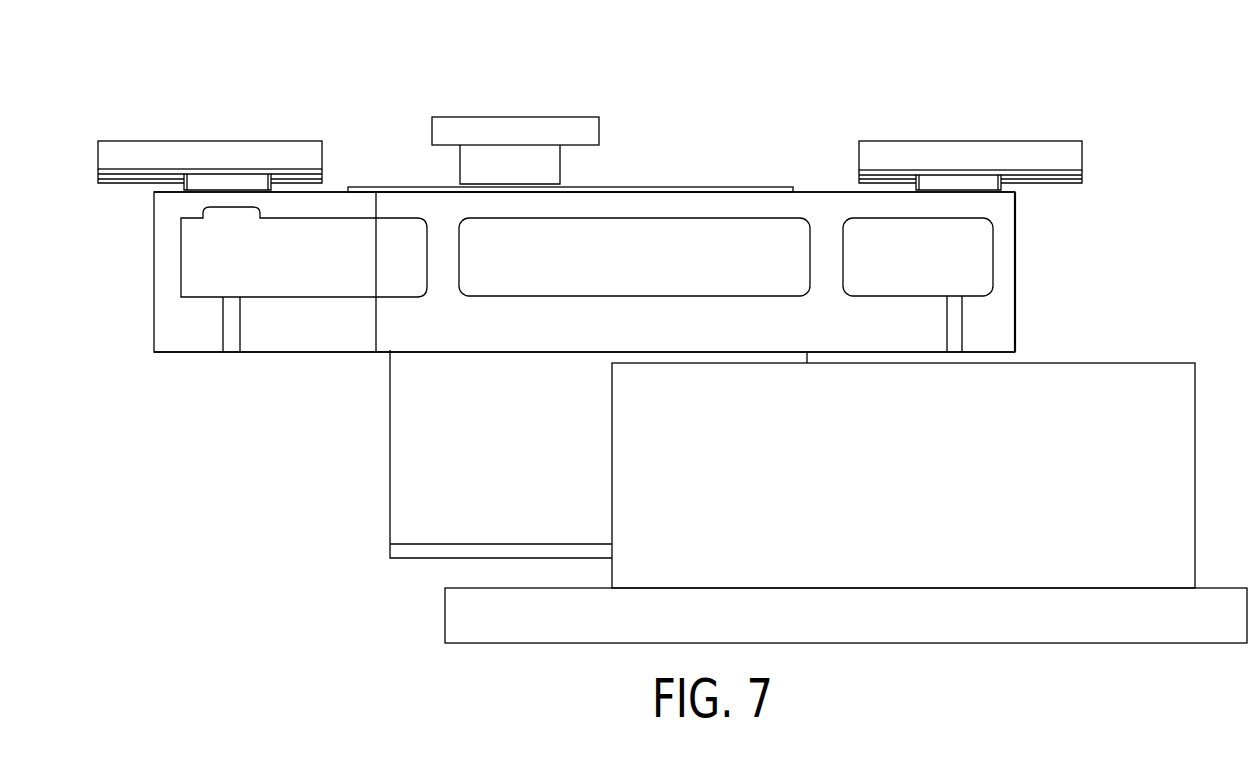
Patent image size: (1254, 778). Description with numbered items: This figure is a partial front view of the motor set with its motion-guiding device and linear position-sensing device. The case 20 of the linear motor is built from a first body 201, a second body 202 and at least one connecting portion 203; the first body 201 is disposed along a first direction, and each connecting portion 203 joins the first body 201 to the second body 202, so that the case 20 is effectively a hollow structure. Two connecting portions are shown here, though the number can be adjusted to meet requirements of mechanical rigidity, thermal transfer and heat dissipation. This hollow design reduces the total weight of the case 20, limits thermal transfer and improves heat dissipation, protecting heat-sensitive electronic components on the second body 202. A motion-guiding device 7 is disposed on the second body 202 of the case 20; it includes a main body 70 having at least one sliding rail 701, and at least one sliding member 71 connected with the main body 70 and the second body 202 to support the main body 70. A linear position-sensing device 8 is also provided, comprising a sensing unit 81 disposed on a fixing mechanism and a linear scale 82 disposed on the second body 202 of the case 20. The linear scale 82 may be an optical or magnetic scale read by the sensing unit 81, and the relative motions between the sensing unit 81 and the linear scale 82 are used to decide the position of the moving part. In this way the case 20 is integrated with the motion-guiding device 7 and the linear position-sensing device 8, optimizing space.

The motion-guiding device 7 is at (590, 108).
The main body 70 is at (158, 157).
The sliding rail 701 is at (163, 174).
The sliding member 71 is at (228, 183).
The linear position-sensing device 8 is at (570, 112).
The sensing unit 81 is at (512, 168).
The linear scale 82 is at (728, 190).
The case 20 is at (697, 272).
The first body 201 is at (725, 327).
The second body 202 is at (902, 202).
The connecting portion 203 is at (825, 253).